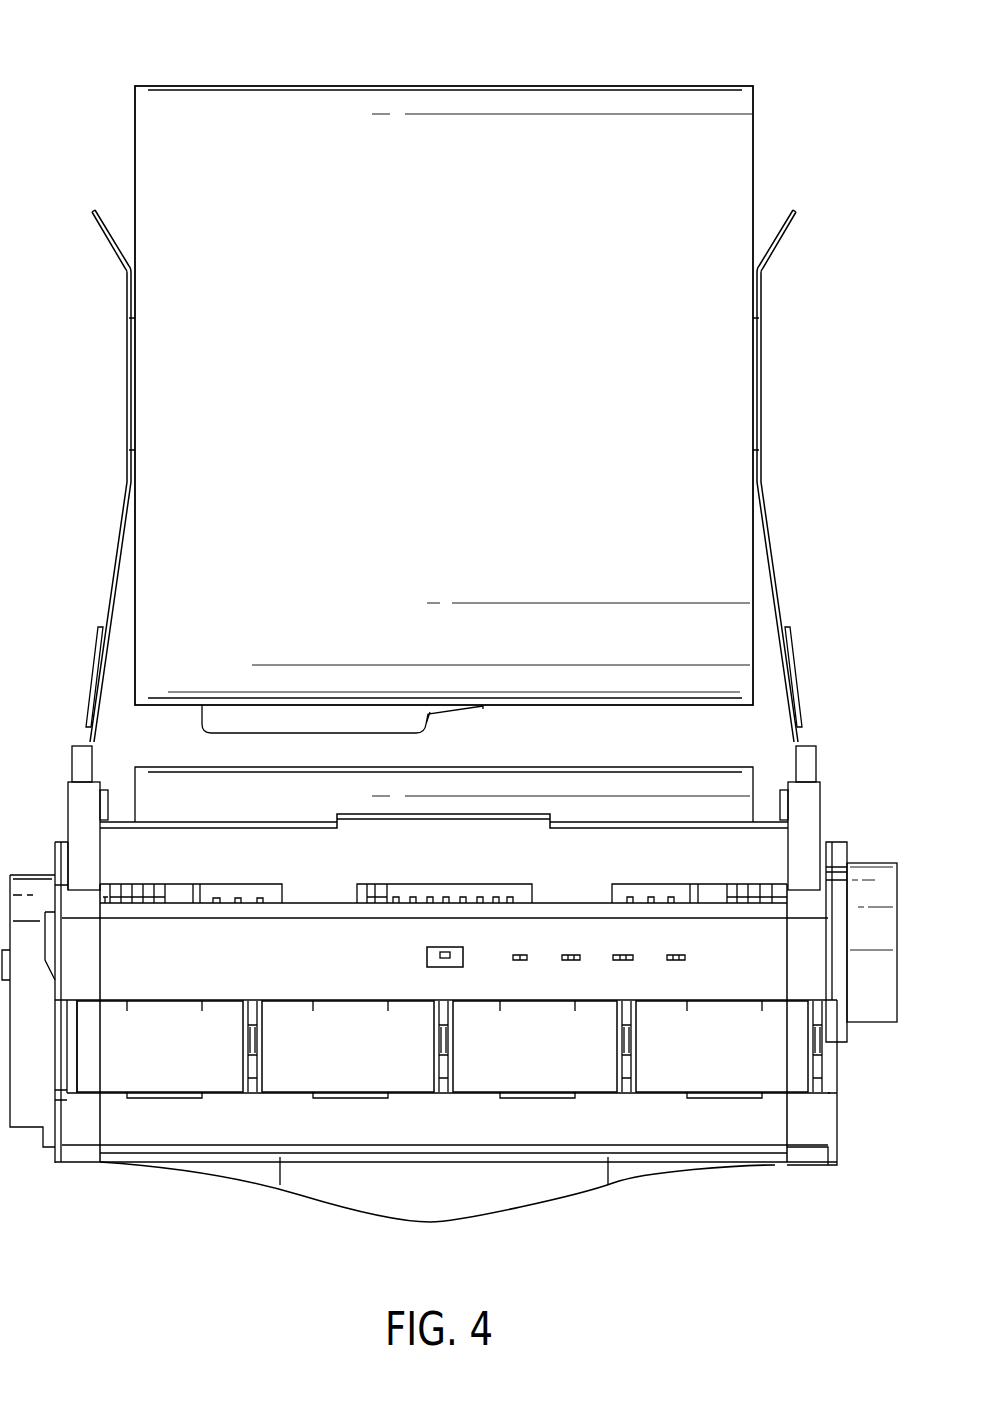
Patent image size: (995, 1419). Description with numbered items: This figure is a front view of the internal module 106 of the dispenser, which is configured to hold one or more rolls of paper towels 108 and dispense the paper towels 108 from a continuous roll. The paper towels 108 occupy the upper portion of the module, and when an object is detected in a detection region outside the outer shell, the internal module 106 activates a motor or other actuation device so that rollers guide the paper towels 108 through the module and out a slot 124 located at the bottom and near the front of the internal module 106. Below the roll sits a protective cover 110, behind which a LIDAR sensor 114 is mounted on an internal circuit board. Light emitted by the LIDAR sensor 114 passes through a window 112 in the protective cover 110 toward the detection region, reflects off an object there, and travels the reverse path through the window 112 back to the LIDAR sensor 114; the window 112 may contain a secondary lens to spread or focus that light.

The internal module 106 is at (147, 42).
The paper towels 108 is at (664, 103).
The protective cover 110 is at (168, 972).
The window 112 is at (421, 948).
The LIDAR sensor 114 is at (453, 967).
The slot 124 is at (418, 1175).